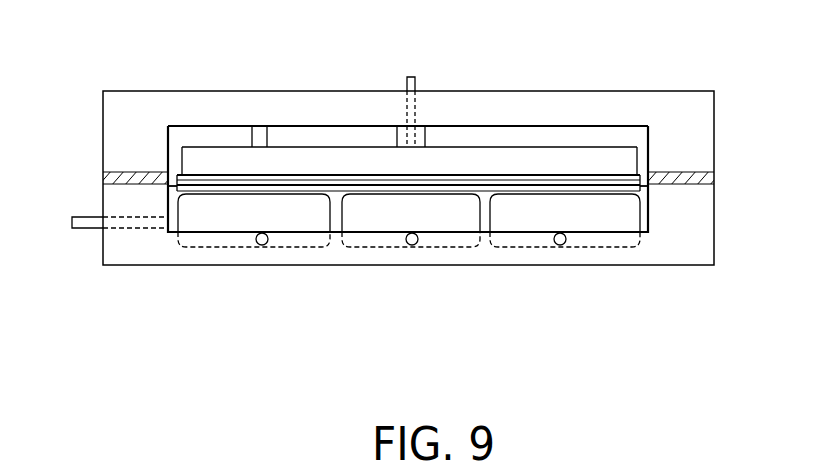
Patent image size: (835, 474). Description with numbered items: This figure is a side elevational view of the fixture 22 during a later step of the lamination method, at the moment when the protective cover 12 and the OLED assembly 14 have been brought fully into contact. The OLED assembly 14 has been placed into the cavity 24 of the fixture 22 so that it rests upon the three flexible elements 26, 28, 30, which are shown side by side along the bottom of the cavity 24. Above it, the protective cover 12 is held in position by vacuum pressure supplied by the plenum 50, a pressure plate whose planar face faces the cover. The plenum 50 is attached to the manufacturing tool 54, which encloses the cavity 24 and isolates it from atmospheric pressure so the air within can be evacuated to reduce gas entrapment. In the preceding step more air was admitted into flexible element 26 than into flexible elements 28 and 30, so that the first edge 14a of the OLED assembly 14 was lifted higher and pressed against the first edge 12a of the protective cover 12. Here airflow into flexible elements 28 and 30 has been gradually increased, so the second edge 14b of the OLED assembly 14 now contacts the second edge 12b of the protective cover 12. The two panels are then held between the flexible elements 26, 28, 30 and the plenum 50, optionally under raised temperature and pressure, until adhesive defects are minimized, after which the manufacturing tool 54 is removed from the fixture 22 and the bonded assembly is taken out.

The protective cover 12 is at (597, 175).
The first edge of protective cover 12a is at (173, 177).
The second edge of protective cover 12b is at (637, 175).
The OLED assembly 14 is at (506, 188).
The first edge of OLED assembly 14a is at (177, 188).
The second edge of OLED assembly 14b is at (633, 187).
The fixture 22 is at (100, 248).
The cavity 24 is at (172, 202).
The flexible element 26 is at (219, 217).
The flexible element 28 is at (378, 218).
The flexible element 30 is at (516, 218).
The plenum 50 is at (297, 142).
The manufacturing tool 54 is at (718, 115).